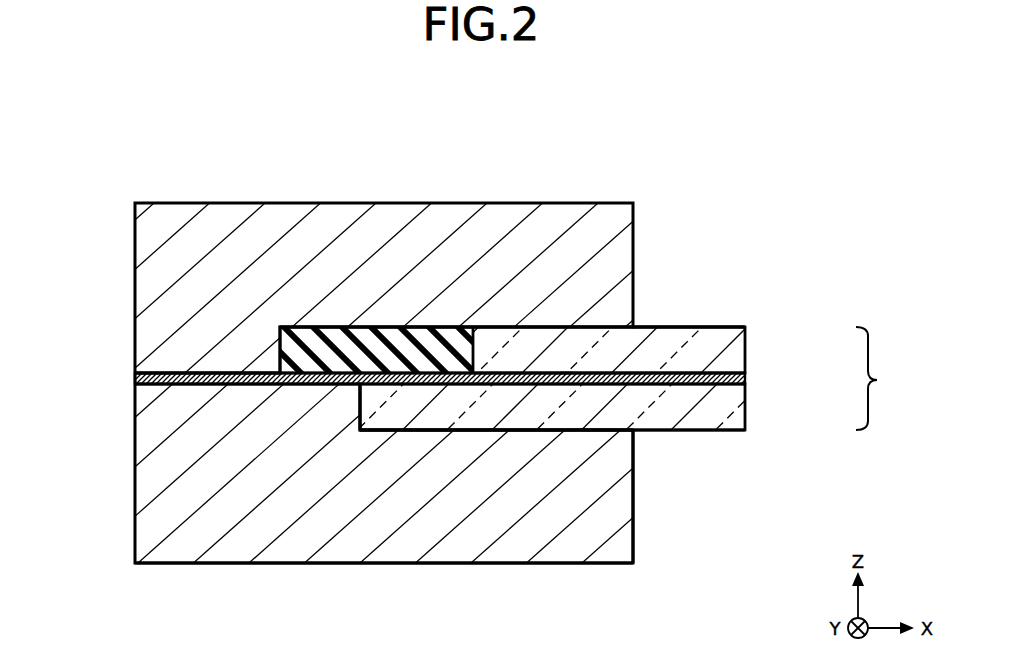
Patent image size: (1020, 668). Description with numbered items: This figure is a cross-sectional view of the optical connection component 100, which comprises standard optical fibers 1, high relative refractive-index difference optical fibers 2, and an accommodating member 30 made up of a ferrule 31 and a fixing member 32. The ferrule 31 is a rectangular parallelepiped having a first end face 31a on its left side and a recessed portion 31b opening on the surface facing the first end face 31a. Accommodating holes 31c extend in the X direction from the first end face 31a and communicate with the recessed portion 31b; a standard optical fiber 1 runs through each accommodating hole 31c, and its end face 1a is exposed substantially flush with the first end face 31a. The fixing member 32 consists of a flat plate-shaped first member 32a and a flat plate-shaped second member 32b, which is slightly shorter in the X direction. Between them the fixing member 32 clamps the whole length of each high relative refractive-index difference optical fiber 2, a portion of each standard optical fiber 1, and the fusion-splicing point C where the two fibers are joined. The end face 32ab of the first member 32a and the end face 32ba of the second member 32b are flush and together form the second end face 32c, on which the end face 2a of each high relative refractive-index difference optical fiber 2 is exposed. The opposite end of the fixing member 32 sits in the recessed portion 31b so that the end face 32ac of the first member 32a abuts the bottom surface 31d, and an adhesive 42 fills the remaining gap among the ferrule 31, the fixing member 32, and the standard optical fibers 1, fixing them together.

The optical connection component 100 is at (587, 145).
The accommodating member 30 is at (700, 145).
The ferrule 31 is at (172, 196).
The first end face 31a is at (135, 563).
The recessed portion 31b is at (631, 432).
The accommodating hole 31c is at (253, 373).
The bottom surface 31d is at (352, 397).
The adhesive 42 is at (377, 345).
The fixing member 32 is at (652, 320).
The first member 32a is at (683, 432).
The second member 32b is at (717, 337).
The second end face 32c is at (886, 378).
The end face 32ba is at (745, 349).
The end face 32ab is at (745, 405).
The end face 32ac is at (360, 402).
The standard optical fiber 1 is at (218, 380).
The end face 1a is at (135, 374).
The high relative refractive-index difference optical fiber 2 is at (725, 385).
The end face 2a is at (745, 378).
The fusion-splicing point C is at (567, 375).